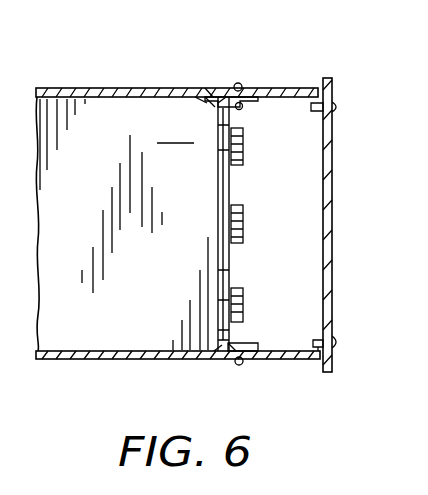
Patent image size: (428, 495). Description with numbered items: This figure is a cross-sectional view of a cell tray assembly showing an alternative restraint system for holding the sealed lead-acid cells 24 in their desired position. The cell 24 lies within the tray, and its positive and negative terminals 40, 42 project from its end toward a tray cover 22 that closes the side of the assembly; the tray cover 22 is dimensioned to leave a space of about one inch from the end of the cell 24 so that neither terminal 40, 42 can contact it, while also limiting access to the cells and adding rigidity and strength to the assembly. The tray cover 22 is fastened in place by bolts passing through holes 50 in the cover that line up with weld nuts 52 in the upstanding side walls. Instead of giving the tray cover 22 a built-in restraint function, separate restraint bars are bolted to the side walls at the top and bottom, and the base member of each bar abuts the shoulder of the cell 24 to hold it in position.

The tray cover 22 is at (330, 222).
The sealed lead-acid cell 24 is at (178, 223).
The positive terminal 40 is at (243, 143).
The negative terminal 42 is at (243, 300).
The hole 50 is at (336, 342).
The weld nut 52 is at (320, 325).